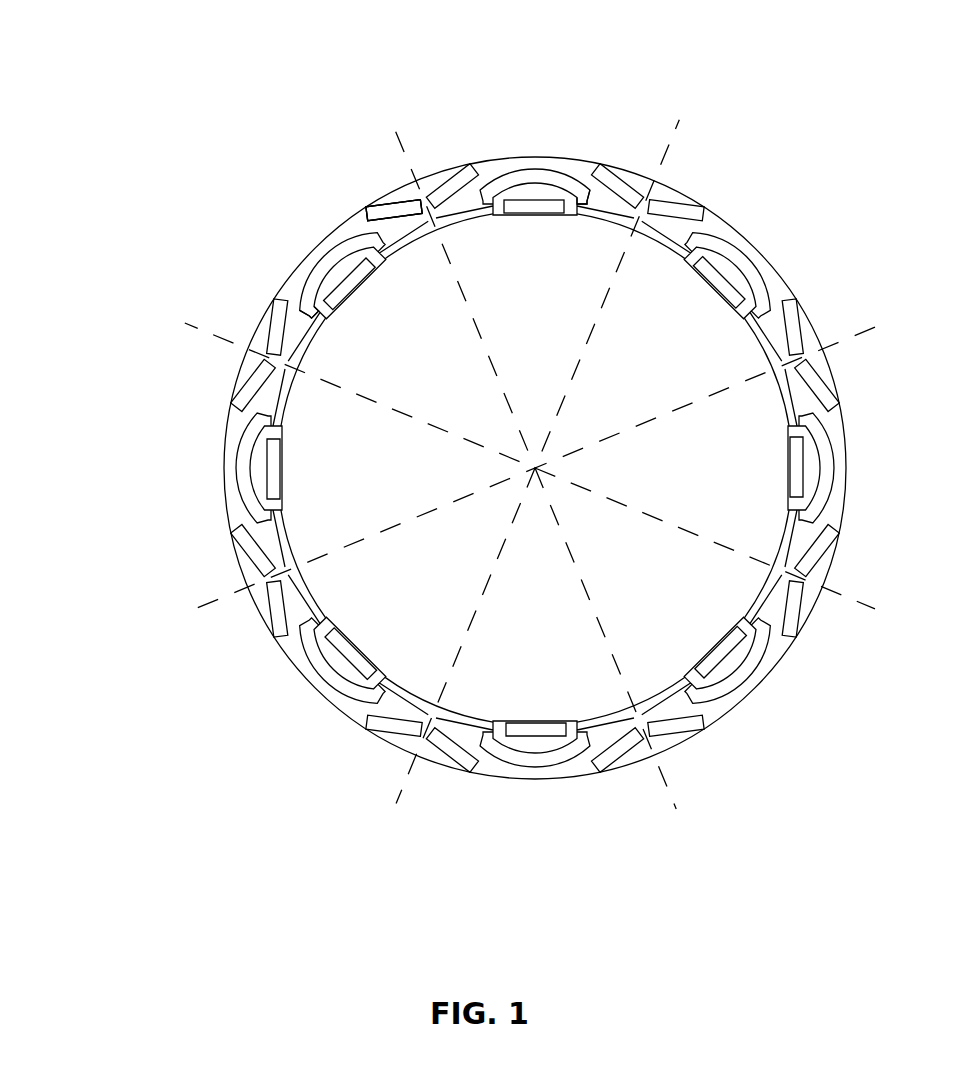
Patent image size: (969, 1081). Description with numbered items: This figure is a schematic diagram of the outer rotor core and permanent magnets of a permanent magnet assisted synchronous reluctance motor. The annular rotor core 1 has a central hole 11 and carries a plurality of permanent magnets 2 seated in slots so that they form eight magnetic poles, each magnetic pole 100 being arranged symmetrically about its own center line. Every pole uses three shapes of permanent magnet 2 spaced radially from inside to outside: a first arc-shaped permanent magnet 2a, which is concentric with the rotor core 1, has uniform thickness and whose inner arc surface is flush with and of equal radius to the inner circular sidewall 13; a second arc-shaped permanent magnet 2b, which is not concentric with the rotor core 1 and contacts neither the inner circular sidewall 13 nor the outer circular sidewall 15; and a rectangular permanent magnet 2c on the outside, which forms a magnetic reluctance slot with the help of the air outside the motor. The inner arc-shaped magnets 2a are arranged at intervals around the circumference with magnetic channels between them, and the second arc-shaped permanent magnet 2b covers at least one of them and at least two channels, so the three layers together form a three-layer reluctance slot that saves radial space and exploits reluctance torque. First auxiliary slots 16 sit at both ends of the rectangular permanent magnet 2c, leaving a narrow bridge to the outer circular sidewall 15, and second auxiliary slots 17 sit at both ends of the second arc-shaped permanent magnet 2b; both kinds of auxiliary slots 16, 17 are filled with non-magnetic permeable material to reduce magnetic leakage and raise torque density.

The magnetic pole 100 is at (172, 492).
The annular rotor core 1 is at (304, 262).
The central hole 11 is at (313, 404).
The permanent magnet 2 is at (478, 116).
The first arc-shaped permanent magnet 2a is at (412, 233).
The second arc-shaped permanent magnet 2b is at (525, 177).
The rectangular permanent magnet 2c is at (456, 178).
The inner circular sidewall 13 is at (575, 187).
The outer circular sidewall 15 is at (631, 184).
The first auxiliary slot 16 is at (368, 208).
The second auxiliary slot 17 is at (310, 313).